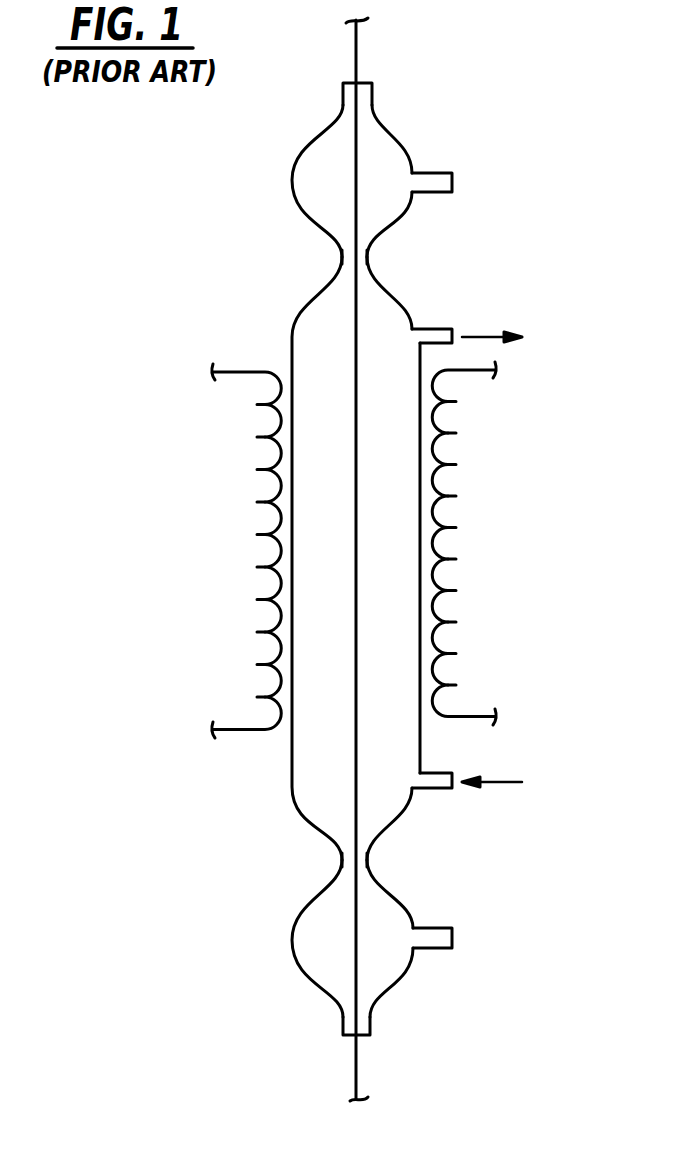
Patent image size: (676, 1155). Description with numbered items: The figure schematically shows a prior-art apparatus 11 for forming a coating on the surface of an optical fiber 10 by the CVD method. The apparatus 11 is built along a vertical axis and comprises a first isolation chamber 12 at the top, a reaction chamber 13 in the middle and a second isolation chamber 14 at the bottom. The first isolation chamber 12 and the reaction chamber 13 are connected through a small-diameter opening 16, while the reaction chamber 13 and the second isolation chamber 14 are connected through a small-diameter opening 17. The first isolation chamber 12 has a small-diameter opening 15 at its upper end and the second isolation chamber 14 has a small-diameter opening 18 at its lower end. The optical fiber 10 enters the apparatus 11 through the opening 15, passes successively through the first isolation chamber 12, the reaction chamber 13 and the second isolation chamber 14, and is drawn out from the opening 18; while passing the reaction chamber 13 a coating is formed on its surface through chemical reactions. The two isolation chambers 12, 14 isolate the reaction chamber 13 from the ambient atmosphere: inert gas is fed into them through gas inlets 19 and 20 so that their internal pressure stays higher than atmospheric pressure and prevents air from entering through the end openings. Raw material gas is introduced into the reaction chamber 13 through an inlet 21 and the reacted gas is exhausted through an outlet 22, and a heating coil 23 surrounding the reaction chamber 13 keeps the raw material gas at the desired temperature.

The optical fiber 10 is at (358, 40).
The apparatus 11 is at (472, 217).
The first isolation chamber 12 is at (299, 176).
The reaction chamber 13 is at (310, 662).
The second isolation chamber 14 is at (305, 956).
The small-diameter opening 15 is at (343, 93).
The small-diameter opening 16 is at (346, 257).
The small-diameter opening 17 is at (342, 860).
The small-diameter opening 18 is at (343, 1017).
The gas inlet 19 is at (432, 182).
The gas inlet 20 is at (432, 948).
The inlet 21 is at (436, 790).
The outlet 22 is at (434, 338).
The heating coil 23 is at (235, 373).